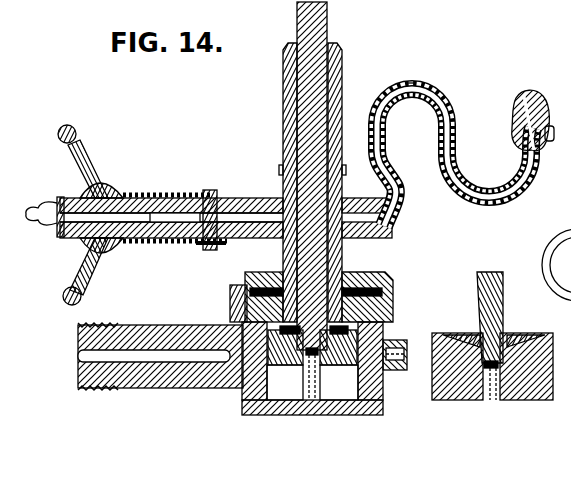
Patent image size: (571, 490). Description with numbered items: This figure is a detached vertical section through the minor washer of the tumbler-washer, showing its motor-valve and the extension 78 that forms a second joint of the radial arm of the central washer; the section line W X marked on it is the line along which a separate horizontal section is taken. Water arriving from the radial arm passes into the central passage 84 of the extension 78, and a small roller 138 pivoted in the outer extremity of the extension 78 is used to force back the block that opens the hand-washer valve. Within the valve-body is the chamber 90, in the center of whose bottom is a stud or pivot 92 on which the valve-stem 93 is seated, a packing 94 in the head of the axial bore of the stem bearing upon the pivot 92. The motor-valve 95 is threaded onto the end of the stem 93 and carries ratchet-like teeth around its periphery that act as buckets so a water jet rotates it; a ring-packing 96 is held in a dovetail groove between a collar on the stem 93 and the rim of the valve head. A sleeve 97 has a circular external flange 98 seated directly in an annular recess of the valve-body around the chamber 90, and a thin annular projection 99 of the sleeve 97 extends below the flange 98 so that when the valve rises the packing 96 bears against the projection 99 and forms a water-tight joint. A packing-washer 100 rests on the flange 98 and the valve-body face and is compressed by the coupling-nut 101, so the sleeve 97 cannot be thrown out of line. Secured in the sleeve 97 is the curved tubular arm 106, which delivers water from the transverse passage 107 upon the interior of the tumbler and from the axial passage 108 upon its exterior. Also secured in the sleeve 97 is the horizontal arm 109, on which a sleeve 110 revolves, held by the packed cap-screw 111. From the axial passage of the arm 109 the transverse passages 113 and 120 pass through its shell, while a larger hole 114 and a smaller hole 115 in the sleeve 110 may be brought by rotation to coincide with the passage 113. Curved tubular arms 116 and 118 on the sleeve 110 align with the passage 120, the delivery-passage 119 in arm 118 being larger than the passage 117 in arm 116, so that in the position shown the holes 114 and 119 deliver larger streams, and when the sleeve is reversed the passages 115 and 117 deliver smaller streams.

The valve-stem 93 is at (322, 13).
The sleeve 97 is at (283, 78).
The sleeve 110 is at (171, 209).
The horizontal arm 109 is at (315, 208).
The larger hole 114 is at (211, 203).
The transverse passage 113 is at (175, 218).
The smaller hole 115 is at (210, 253).
The packed cap-screw 111 is at (45, 211).
The transverse passage 120 is at (118, 192).
The transverse delivery-passage 119 is at (90, 162).
The curved tubular arm 118 is at (59, 142).
The delivery-passage 117 is at (94, 266).
The curved tubular arm 116 is at (64, 287).
The curved tubular arm 106 is at (455, 157).
The transverse passage 107 is at (413, 72).
The axial passage 108 is at (533, 112).
The coupling-nut 101 is at (388, 279).
The packing-washer 100 is at (393, 292).
The chamber 90 is at (262, 402).
The circular external flange 98 is at (313, 336).
The ring-packing 96 is at (283, 326).
The annular projection 99 is at (343, 326).
The motor-valve 95 is at (285, 382).
The stud or pivot 92 is at (339, 383).
The packing 94 is at (313, 402).
The extension 78 is at (160, 349).
The central passage 84 is at (154, 357).
The section line W X W is at (78, 356).
The roller 138 is at (398, 363).
The section line W X is at (415, 355).